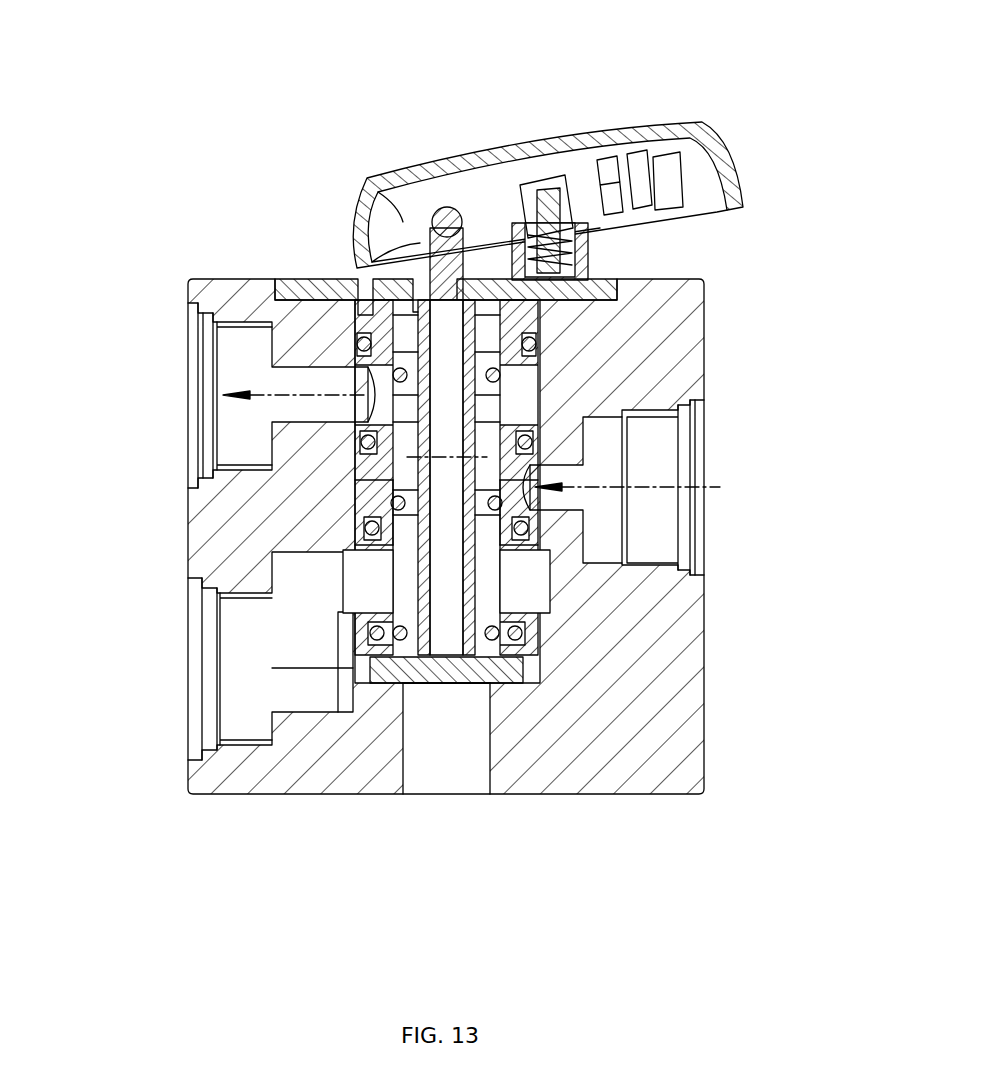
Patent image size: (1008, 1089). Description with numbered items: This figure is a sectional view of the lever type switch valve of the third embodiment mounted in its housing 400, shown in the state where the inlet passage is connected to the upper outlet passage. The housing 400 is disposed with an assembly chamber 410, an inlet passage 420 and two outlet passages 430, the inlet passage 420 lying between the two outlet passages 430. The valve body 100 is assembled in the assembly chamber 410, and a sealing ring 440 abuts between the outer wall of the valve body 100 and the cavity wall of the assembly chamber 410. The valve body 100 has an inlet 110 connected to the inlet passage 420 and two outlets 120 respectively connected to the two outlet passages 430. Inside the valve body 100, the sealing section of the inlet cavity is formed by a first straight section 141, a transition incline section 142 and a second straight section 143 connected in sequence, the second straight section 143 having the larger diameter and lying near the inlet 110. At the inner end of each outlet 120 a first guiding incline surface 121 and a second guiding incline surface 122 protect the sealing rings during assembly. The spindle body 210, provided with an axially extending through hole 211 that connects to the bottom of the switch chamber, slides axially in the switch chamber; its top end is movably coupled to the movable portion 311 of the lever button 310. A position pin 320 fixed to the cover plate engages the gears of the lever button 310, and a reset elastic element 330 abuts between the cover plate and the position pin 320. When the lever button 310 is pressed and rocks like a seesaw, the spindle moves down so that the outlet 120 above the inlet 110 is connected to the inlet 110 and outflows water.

The valve body 100 is at (520, 325).
The inlet 110 is at (513, 487).
The outlet 120 is at (390, 403).
The first guiding incline surface 121 is at (372, 397).
The second guiding incline surface 122 is at (395, 432).
The first straight section 141 is at (535, 427).
The transition incline section 142 is at (520, 443).
The second straight section 143 is at (500, 455).
The spindle body 210 is at (467, 440).
The through hole 211 is at (510, 648).
The lever button 310 is at (550, 140).
The movable portion 311 is at (400, 168).
The position pin 320 is at (513, 180).
The reset elastic element 330 is at (458, 210).
The housing 400 is at (688, 760).
The assembly chamber 410 is at (510, 677).
The inlet passage 420 is at (643, 467).
The outlet passage 430 is at (237, 380).
The sealing ring 440 is at (537, 340).